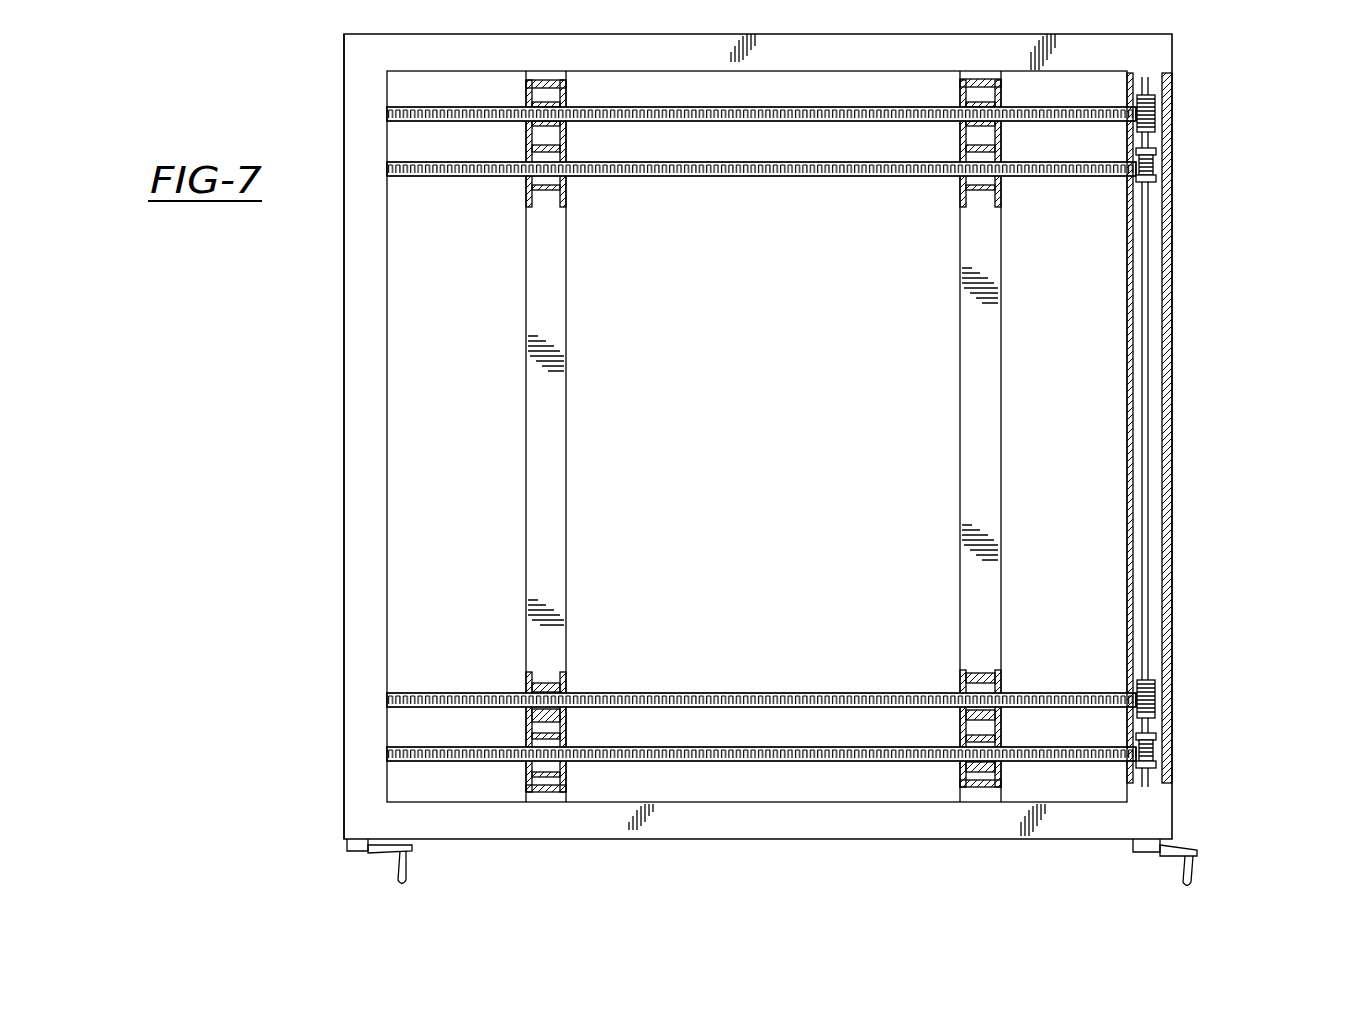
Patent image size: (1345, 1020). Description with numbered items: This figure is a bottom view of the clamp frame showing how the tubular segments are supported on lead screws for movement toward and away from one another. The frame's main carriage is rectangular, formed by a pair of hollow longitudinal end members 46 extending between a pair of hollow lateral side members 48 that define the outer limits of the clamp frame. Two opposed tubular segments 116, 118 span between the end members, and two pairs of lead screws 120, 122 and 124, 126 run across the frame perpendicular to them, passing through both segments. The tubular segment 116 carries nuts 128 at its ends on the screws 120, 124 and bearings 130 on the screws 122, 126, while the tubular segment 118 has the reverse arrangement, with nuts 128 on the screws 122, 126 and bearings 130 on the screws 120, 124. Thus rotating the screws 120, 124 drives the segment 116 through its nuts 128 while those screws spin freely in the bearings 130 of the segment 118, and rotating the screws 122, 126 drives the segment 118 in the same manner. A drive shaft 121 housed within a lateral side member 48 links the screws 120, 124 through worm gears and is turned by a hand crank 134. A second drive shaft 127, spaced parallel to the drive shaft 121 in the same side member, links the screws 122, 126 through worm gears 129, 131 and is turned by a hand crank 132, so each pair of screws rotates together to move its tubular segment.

The longitudinal end member 46 is at (763, 62).
The lateral side member 48 is at (1170, 333).
The tubular segment 116 is at (558, 397).
The tubular segment 118 is at (962, 432).
The lead screw 120 is at (900, 118).
The lead screw 122 is at (818, 176).
The lead screw 124 is at (737, 694).
The lead screw 126 is at (822, 752).
The nut 128 is at (567, 82).
The bearing 130 is at (1000, 88).
The drive shaft 121 is at (1147, 382).
The drive shaft 127 is at (1146, 406).
The worm gear 129 is at (1158, 160).
The worm gear 131 is at (1158, 748).
The hand crank 132 is at (1163, 852).
The hand crank 134 is at (360, 850).